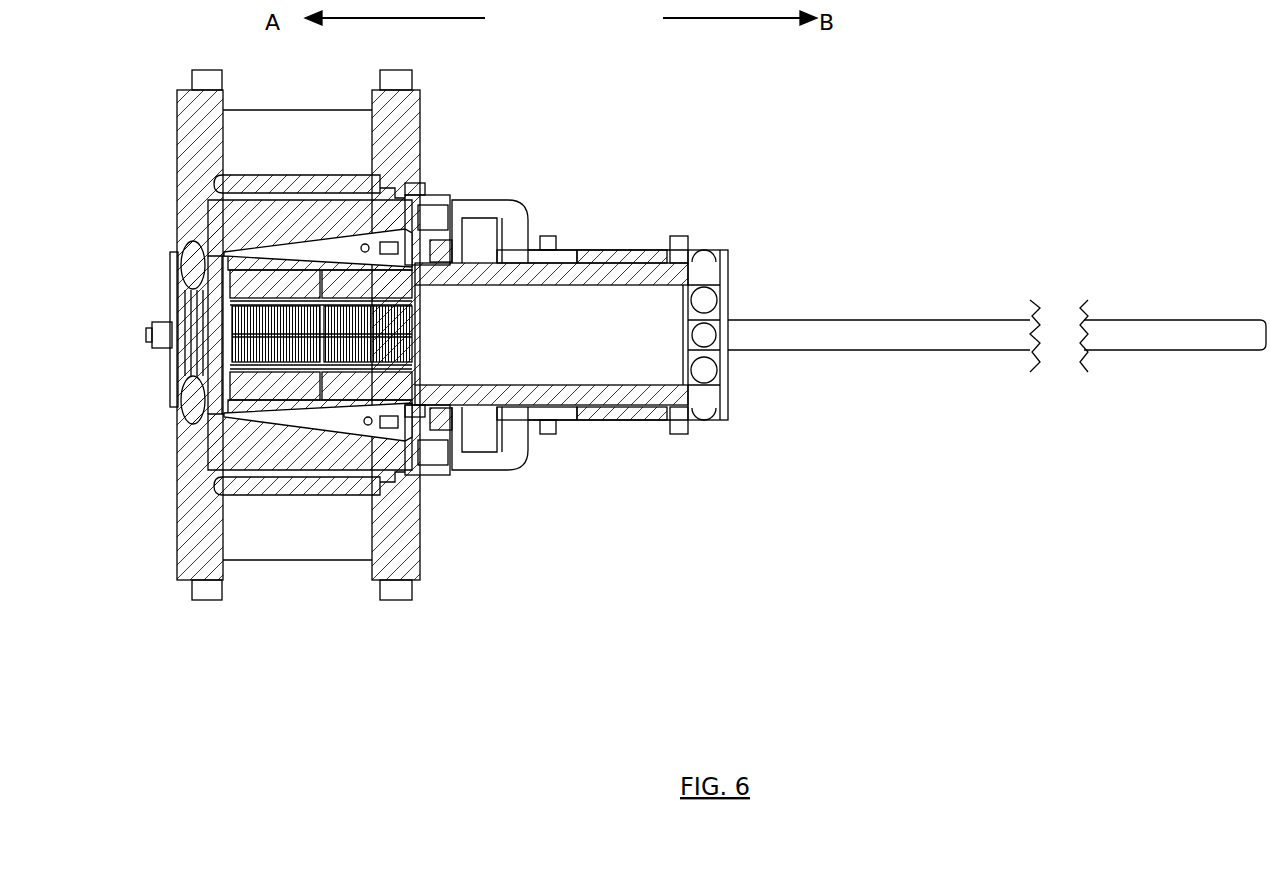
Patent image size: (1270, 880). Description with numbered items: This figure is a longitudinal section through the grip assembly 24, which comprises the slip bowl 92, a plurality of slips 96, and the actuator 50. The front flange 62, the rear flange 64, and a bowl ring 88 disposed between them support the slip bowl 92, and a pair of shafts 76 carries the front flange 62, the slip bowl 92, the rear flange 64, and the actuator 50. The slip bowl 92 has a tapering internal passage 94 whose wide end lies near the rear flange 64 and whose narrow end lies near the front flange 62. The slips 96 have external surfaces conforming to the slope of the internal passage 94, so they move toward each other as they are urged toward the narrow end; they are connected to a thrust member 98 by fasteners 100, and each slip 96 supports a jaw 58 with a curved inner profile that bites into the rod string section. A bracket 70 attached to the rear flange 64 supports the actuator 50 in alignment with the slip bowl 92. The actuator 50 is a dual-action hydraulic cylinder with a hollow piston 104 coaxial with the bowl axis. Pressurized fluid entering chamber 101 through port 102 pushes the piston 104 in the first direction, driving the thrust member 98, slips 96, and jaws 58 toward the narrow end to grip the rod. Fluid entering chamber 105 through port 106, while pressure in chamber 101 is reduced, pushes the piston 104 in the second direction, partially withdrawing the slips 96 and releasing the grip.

The grip assembly 24 is at (588, 98).
The front flange 62 is at (175, 123).
The rear flange 64 is at (412, 112).
The jaw 58 is at (170, 268).
The slips 96 is at (205, 240).
The slip bowl 92 is at (178, 443).
The bowl ring 88 is at (217, 483).
The tapering internal passage 94 is at (300, 430).
The thrust member 98 is at (428, 465).
The fasteners 100 is at (463, 247).
The hollow piston 104 is at (507, 254).
The chamber 105 is at (550, 262).
The chamber 101 is at (610, 262).
The bracket 70 is at (527, 470).
The port 106 is at (555, 423).
The actuator 50 is at (595, 418).
The port 102 is at (623, 417).
The shafts 76 is at (880, 320).